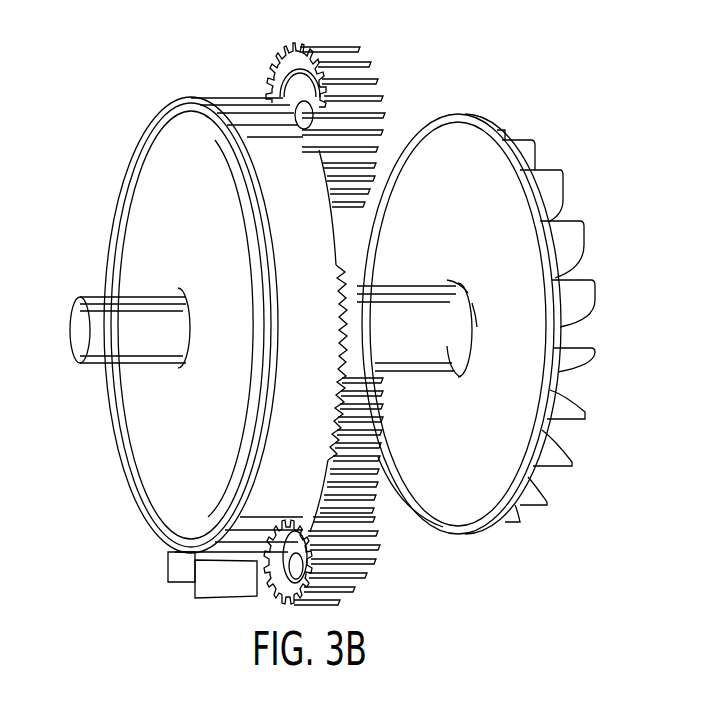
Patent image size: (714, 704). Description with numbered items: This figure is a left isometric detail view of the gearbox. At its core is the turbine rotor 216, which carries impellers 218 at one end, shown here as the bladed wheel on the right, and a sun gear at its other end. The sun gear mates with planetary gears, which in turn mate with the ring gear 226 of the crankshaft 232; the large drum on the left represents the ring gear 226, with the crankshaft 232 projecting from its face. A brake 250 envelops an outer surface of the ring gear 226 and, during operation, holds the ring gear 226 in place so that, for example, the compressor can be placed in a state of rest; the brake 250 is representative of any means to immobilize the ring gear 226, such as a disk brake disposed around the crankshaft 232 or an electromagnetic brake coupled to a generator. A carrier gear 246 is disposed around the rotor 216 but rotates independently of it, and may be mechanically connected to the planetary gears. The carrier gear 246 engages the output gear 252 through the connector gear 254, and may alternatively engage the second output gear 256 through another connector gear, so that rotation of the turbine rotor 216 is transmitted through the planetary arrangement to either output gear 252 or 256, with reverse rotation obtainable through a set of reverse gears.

The turbine rotor 216 is at (447, 350).
The impellers 218 is at (485, 121).
The ring gear 226 is at (153, 238).
The crankshaft 232 is at (92, 363).
The carrier gear 246 is at (378, 289).
The brake 250 is at (245, 548).
The output gear 252 is at (357, 557).
The connector gear 254 is at (388, 443).
The output gear 256 is at (378, 90).